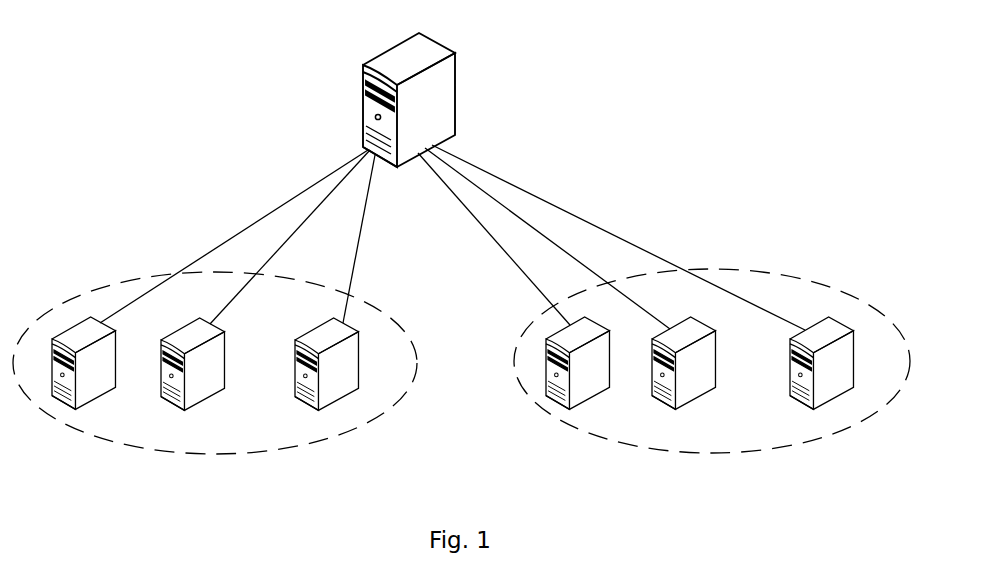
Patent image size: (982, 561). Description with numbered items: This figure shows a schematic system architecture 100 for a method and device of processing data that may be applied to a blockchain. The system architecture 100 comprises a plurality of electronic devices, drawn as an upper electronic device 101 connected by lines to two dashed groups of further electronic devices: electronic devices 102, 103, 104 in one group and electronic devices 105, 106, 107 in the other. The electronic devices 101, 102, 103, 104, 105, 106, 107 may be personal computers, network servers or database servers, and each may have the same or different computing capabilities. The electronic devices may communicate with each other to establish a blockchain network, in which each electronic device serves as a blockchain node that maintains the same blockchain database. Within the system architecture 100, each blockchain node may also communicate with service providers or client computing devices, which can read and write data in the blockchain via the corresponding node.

The system architecture 100 is at (185, 20).
The electronic device 101 is at (432, 100).
The electronic device 102 is at (103, 362).
The electronic device 103 is at (213, 364).
The electronic device 104 is at (347, 364).
The electronic device 105 is at (597, 363).
The electronic device 106 is at (702, 363).
The electronic device 107 is at (840, 363).